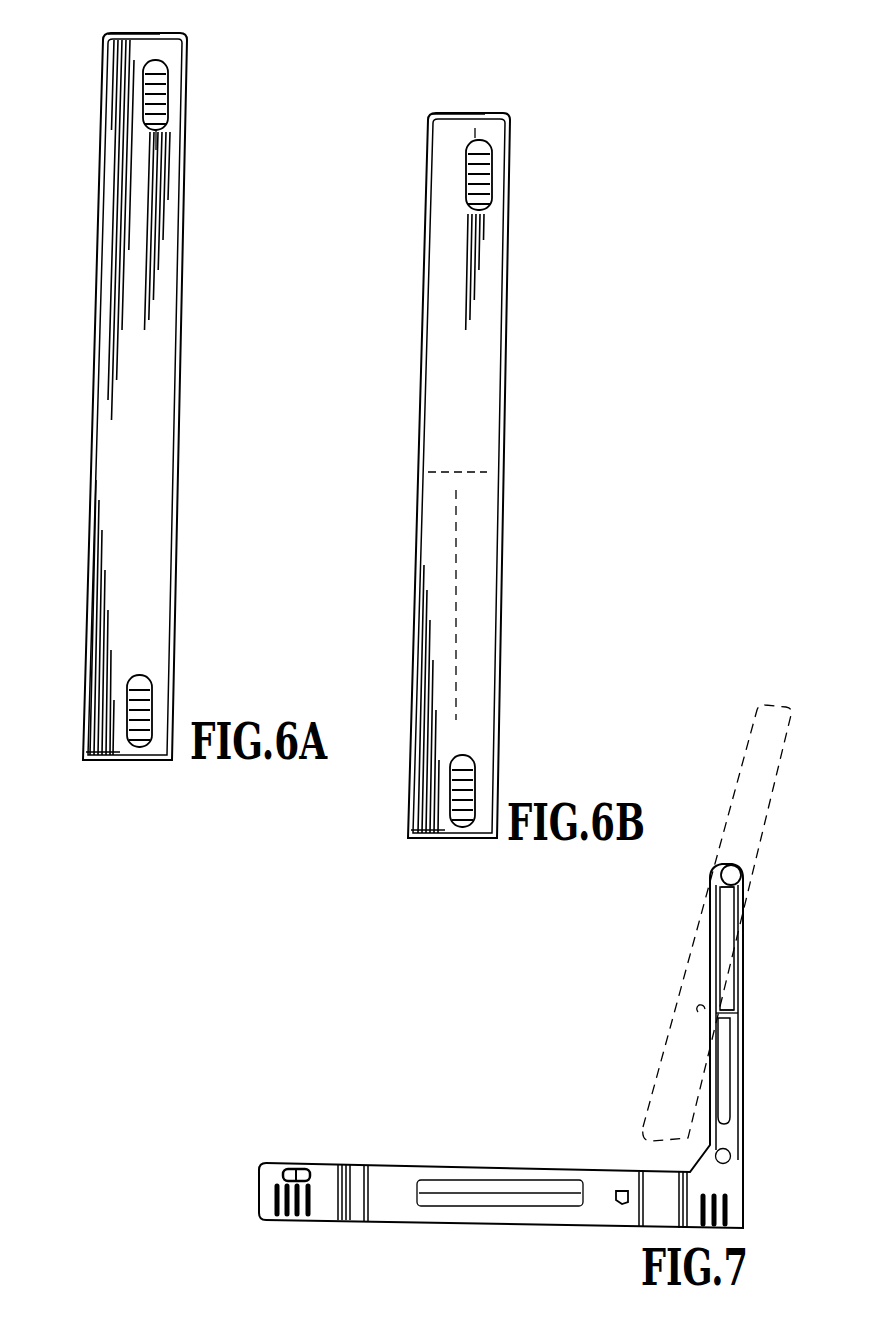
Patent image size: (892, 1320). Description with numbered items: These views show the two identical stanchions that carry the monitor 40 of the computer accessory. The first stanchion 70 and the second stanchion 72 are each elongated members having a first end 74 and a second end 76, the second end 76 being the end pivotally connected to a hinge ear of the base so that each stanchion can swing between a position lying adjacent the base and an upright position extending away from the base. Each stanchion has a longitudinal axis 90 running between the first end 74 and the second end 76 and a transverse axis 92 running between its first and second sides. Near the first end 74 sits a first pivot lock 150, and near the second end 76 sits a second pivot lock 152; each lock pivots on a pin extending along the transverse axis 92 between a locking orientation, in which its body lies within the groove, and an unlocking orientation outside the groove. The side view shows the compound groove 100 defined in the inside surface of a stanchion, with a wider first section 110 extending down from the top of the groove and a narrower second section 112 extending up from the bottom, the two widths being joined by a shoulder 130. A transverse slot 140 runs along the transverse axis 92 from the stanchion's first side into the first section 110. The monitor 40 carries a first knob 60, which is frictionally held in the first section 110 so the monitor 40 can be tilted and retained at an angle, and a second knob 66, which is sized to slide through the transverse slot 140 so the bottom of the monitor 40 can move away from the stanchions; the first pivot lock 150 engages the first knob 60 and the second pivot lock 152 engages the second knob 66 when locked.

In FIG. 6A, the first stanchion 70 is at (80, 44).
In FIG. 6B, the second stanchion 72 is at (410, 146).
In FIG. 6A, the first end 74 is at (128, 34).
In FIG. 6B, the first end 74 is at (456, 114).
In FIG. 6A, the second end 76 is at (110, 760).
In FIG. 6B, the second end 76 is at (416, 838).
In FIG. 6A, the first pivot lock 150 is at (143, 83).
In FIG. 6B, the first pivot lock 150 is at (466, 182).
In FIG. 7, the first pivot lock 150 is at (730, 898).
In FIG. 6A, the second pivot lock 152 is at (136, 760).
In FIG. 6B, the second pivot lock 152 is at (450, 794).
In FIG. 6B, the longitudinal axis 90 is at (456, 518).
In FIG. 6B, the transverse axis 92 is at (448, 476).
In FIG. 7, the monitor 40 is at (741, 770).
In FIG. 7, the first knob 60 is at (719, 870).
In FIG. 7, the second knob 66 is at (700, 1006).
In FIG. 7, the compound groove 100 is at (728, 1088).
In FIG. 7, the first section 110 is at (734, 936).
In FIG. 7, the second section 112 is at (724, 1065).
In FIG. 7, the shoulder 130 is at (720, 1013).
In FIG. 7, the transverse slot 140 is at (734, 1002).